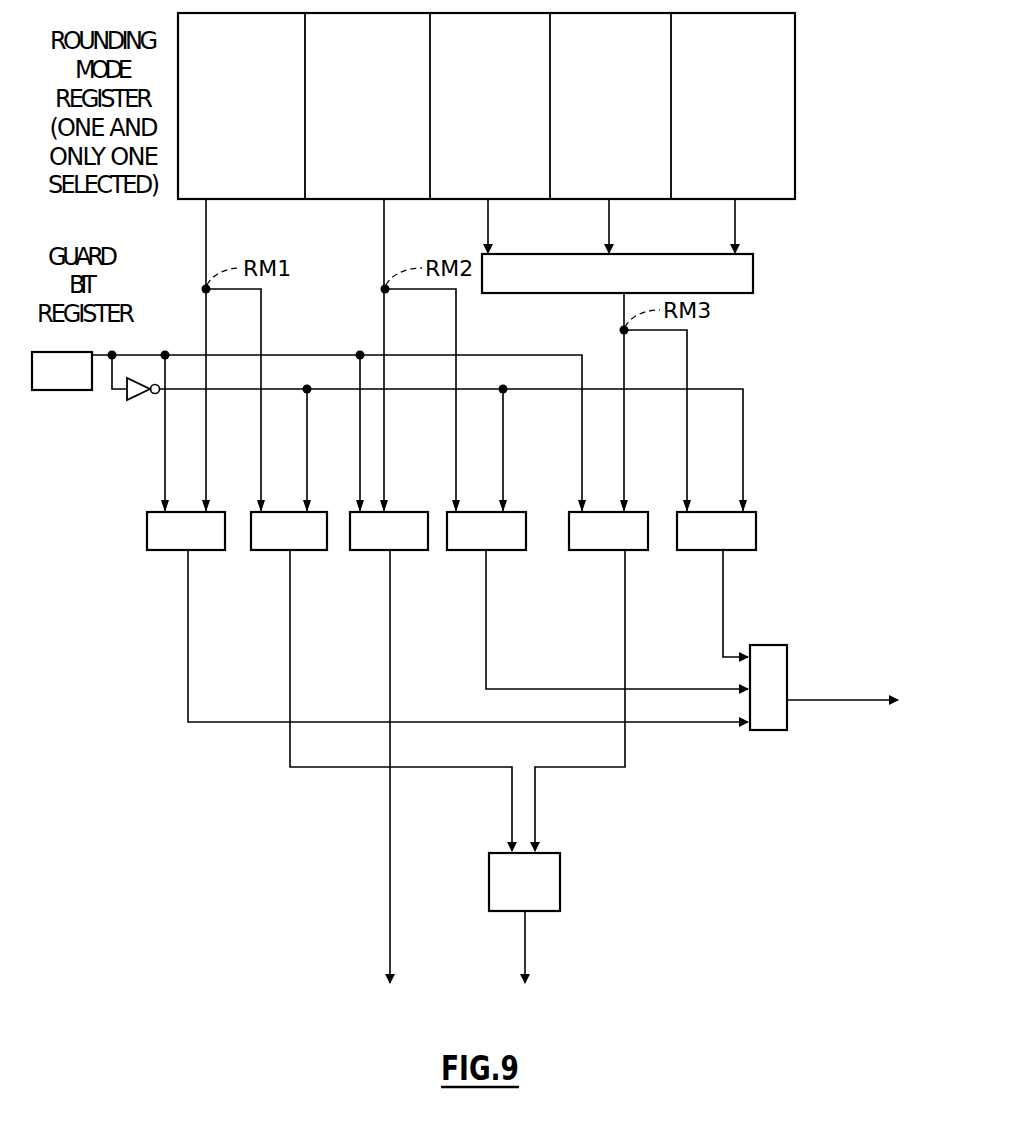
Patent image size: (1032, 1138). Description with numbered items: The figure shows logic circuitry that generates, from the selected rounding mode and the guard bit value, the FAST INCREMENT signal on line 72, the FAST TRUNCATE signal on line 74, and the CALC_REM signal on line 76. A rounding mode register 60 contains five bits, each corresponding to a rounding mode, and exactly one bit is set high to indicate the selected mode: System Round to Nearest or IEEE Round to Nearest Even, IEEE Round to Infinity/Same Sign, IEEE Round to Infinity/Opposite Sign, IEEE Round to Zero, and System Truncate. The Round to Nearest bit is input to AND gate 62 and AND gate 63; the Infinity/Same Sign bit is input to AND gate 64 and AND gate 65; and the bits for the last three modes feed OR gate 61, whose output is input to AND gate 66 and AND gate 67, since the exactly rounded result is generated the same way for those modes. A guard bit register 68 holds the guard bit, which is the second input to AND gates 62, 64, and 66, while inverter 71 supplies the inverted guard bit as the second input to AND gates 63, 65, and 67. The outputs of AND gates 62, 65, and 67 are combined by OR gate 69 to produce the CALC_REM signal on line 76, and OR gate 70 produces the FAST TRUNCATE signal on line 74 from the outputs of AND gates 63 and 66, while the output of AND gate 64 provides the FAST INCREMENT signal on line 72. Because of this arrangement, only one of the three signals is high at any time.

The register 60 is at (795, 140).
The OR gate 61 is at (753, 273).
The AND gate 62 is at (181, 551).
The AND gate 63 is at (284, 551).
The AND gate 64 is at (383, 551).
The AND gate 65 is at (480, 551).
The AND gate 66 is at (603, 551).
The AND gate 67 is at (712, 551).
The guard bit register 68 is at (86, 392).
The OR gate 69 is at (768, 731).
The OR gate 70 is at (561, 888).
The inverter 71 is at (140, 402).
The line 72 is at (392, 955).
The line 74 is at (526, 954).
The line 76 is at (838, 703).